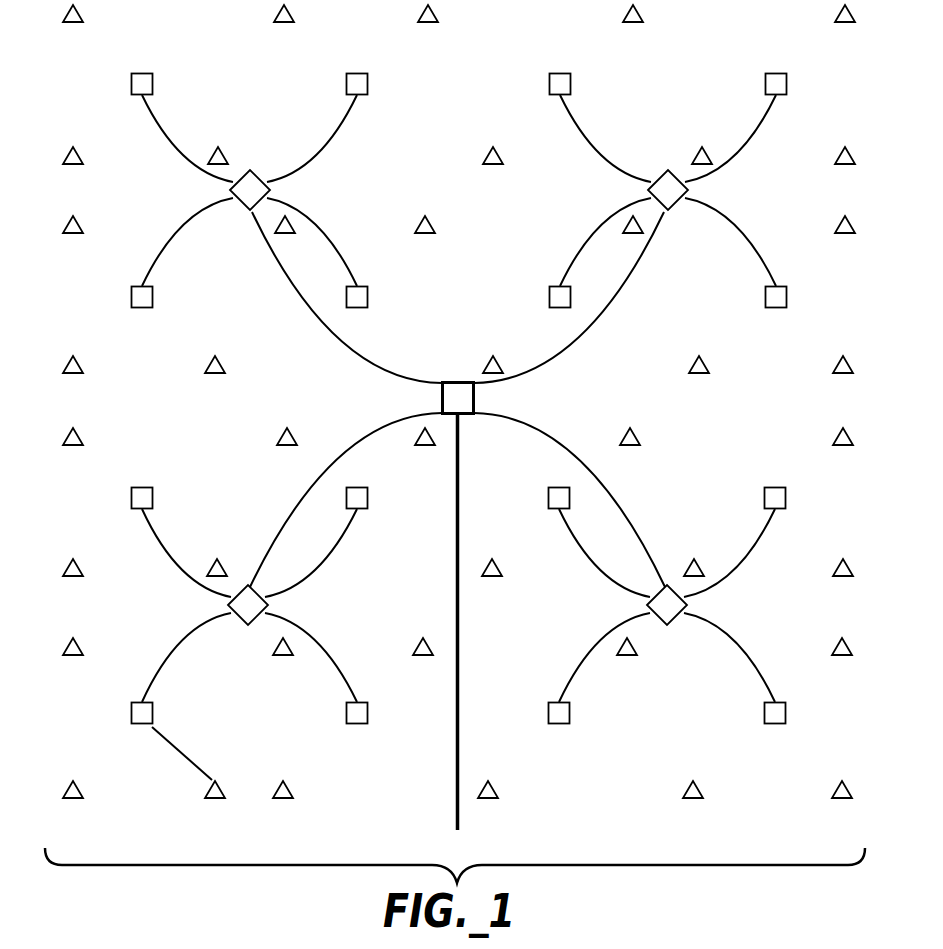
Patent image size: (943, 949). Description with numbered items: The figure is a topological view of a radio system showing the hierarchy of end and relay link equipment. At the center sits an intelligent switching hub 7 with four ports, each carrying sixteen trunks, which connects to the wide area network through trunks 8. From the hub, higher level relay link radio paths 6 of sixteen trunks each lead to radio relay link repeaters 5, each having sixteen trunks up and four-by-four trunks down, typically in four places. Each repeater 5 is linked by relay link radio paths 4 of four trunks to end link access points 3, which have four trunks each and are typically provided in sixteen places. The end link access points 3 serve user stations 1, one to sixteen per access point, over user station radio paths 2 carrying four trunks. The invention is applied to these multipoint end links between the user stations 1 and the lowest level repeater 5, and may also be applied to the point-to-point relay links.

The user station 1 is at (226, 786).
The user station radio path 2 is at (189, 757).
The end link access point 3 is at (153, 495).
The relay link radio path 4 is at (175, 565).
The radio relay link repeater 5 is at (270, 612).
The higher level relay link radio path 6 is at (380, 427).
The intelligent switching hub 7 is at (461, 387).
The trunks to wide area network 8 is at (462, 503).